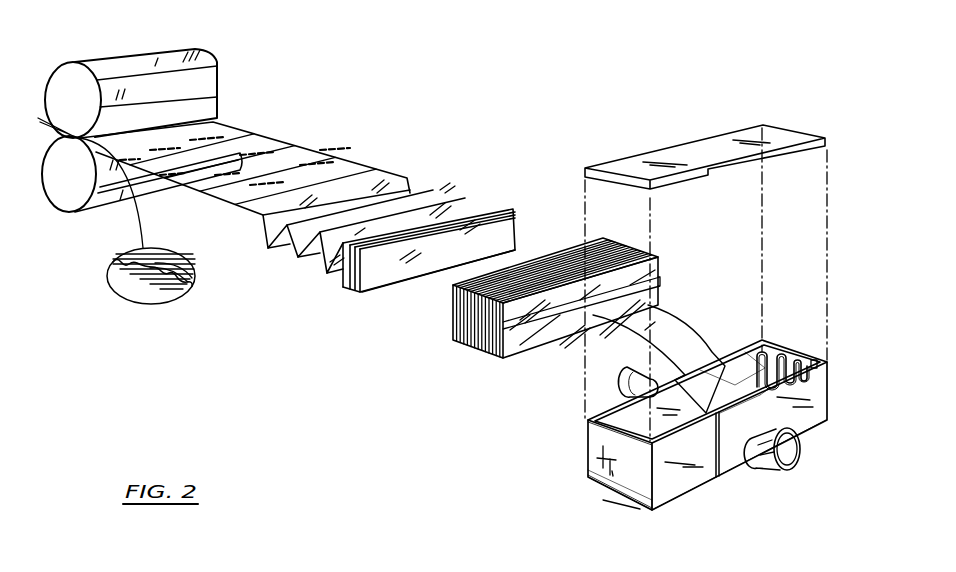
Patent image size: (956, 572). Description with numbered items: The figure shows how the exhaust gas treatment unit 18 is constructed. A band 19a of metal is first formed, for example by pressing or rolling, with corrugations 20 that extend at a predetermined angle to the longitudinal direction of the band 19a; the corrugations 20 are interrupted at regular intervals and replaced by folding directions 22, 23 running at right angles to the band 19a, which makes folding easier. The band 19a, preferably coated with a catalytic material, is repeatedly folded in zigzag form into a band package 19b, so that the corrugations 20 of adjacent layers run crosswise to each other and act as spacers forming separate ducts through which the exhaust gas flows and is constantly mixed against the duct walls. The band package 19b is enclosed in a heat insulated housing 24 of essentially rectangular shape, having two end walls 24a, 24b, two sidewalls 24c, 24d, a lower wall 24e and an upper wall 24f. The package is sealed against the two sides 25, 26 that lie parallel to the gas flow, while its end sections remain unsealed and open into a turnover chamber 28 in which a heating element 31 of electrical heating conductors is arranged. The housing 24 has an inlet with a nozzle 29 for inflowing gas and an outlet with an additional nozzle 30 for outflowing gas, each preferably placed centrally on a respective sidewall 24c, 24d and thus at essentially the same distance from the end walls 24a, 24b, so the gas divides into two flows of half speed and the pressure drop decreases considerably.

The exhaust gas treatment unit 18 is at (711, 496).
The band of metal 19a is at (222, 113).
The band package 19b is at (666, 243).
The corrugations 20 is at (184, 294).
The folding direction 22 is at (188, 158).
The folding direction 23 is at (330, 162).
The housing 24 is at (798, 416).
The end wall 24a is at (613, 463).
The end wall 24b is at (737, 363).
The sidewall 24c is at (627, 498).
The sidewall 24d is at (777, 321).
The lower wall 24e is at (771, 392).
The upper wall 24f is at (700, 156).
The side of the band package 25 is at (556, 322).
The side of the band package 26 is at (553, 257).
The turnover chamber 28 is at (816, 362).
The nozzle 29 is at (758, 462).
The additional nozzle 30 is at (623, 385).
The heating element 31 is at (780, 355).